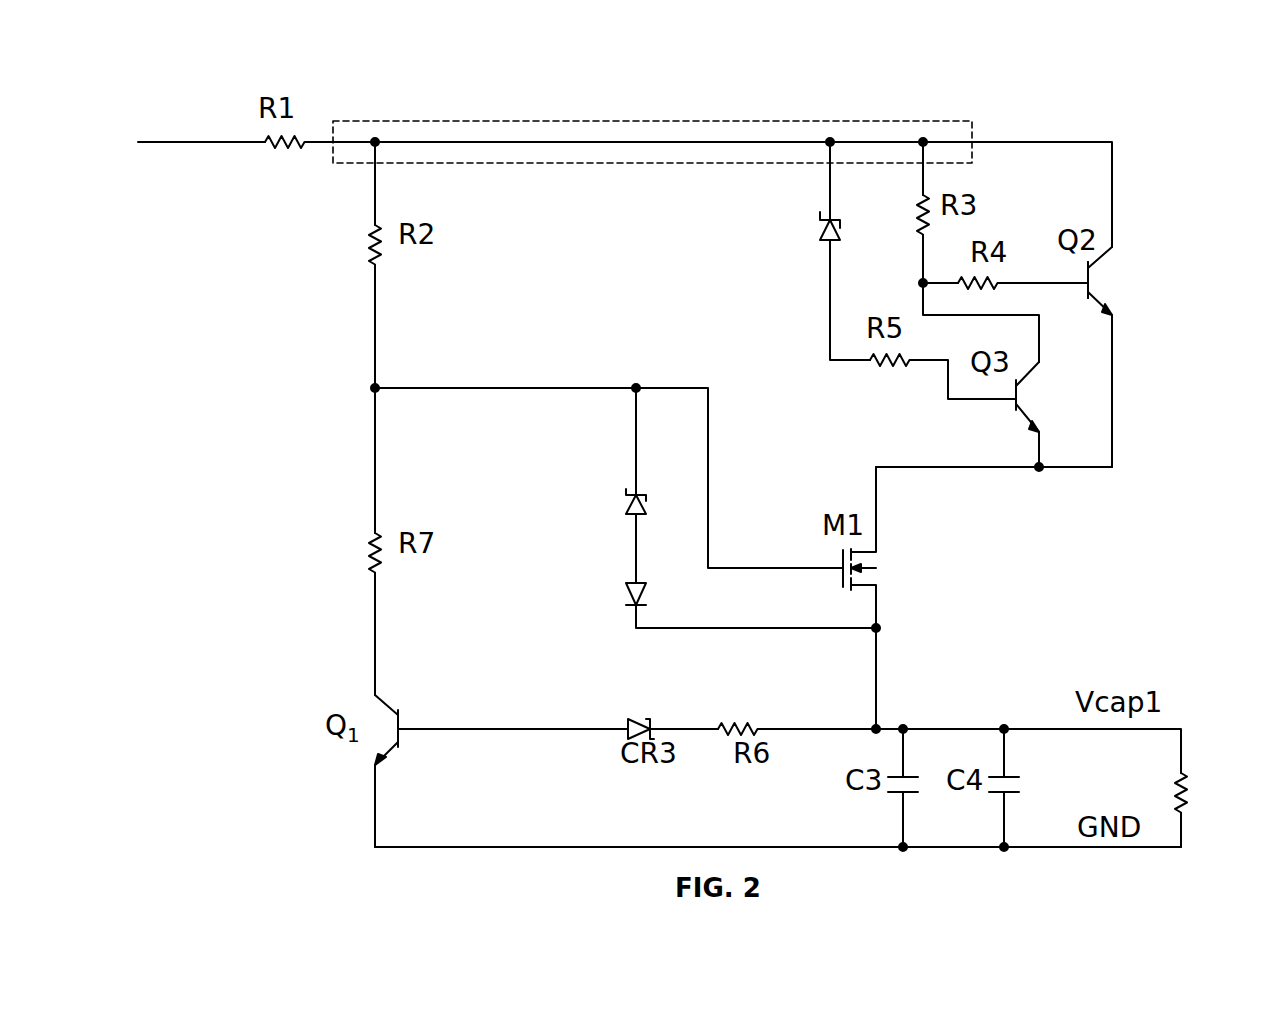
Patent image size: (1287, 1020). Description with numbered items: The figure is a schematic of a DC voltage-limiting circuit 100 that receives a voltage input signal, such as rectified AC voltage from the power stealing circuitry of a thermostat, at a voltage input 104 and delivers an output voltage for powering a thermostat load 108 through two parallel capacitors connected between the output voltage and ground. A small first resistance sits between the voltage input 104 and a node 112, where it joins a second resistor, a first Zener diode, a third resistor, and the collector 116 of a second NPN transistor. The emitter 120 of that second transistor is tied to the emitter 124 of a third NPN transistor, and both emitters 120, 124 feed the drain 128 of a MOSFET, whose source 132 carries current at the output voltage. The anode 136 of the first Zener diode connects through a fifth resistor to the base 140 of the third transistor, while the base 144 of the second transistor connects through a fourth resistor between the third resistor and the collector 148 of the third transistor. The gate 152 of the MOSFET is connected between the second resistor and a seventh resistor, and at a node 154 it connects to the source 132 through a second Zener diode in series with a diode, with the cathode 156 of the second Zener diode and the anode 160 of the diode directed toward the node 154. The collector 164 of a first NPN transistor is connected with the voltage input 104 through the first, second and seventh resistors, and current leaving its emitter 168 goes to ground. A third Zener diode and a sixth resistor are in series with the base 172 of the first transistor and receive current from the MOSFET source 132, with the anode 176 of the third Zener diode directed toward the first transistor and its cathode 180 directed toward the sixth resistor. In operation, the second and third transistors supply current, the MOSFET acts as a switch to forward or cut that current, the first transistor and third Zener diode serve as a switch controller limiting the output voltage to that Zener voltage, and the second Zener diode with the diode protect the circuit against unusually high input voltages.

The DC voltage-limiting circuit 100 is at (1055, 63).
The voltage input 104 is at (205, 142).
The thermostat load 108 is at (1186, 814).
The node 112 is at (912, 121).
The collector of NPN transistor Q2 116 is at (1108, 253).
The emitter of transistor Q2 120 is at (1102, 296).
The emitter of NPN transistor Q3 124 is at (1025, 422).
The drain of MOSFET M1 128 is at (878, 548).
The source of MOSFET M1 132 is at (878, 592).
The anode of Zener diode CR1 136 is at (832, 242).
The base of transistor Q3 140 is at (1008, 402).
The base of transistor Q2 144 is at (1072, 290).
The collector of transistor Q3 148 is at (1043, 363).
The gate of MOSFET M1 152 is at (836, 575).
The node 154 is at (640, 386).
The cathode of Zener diode CR2 156 is at (638, 491).
The anode of diode D1 160 is at (640, 583).
The collector of NPN transistor Q1 164 is at (380, 702).
The emitter of transistor Q1 168 is at (393, 746).
The base of transistor Q1 172 is at (405, 727).
The anode of Zener diode CR3 176 is at (628, 726).
The cathode of Zener diode CR3 180 is at (655, 722).